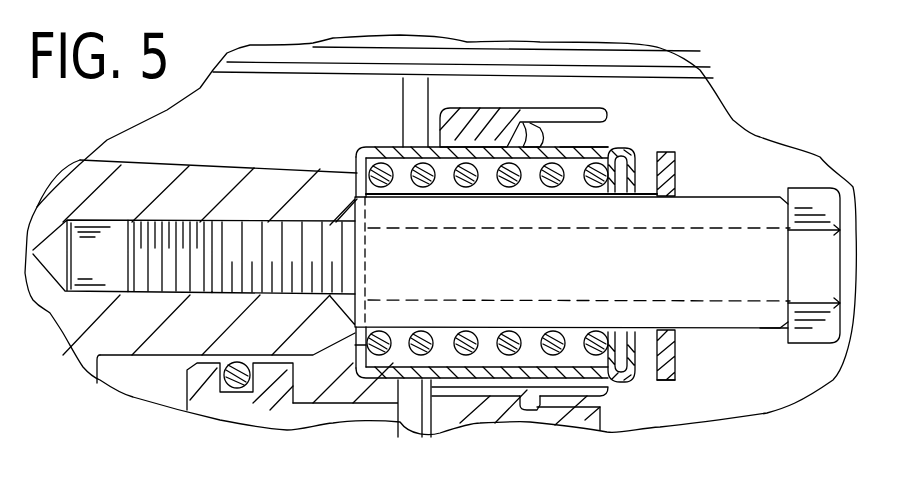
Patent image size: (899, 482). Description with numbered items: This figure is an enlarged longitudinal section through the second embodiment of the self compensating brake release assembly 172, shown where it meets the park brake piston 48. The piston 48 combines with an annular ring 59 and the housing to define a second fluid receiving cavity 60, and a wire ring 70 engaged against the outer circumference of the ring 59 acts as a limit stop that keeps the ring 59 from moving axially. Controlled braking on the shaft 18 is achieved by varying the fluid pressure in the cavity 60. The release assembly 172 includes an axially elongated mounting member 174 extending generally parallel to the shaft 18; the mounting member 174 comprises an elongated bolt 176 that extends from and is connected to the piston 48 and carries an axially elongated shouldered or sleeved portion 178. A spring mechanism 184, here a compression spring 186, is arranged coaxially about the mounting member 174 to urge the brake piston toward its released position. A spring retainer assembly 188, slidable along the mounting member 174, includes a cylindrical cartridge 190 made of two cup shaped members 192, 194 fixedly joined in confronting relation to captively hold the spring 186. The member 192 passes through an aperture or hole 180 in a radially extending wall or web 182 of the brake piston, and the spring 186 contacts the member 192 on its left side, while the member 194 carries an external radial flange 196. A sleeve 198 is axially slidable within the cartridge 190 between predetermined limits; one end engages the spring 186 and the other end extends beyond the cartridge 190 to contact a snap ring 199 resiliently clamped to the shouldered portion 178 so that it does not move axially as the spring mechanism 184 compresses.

The shaft 18 is at (598, 57).
The piston 48 is at (202, 125).
The annular ring 59 is at (203, 400).
The second fluid receiving cavity 60 is at (143, 380).
The wire ring 70 is at (407, 435).
The brake release assembly 172 is at (700, 123).
The mounting member 174 is at (731, 198).
The bolt 176 is at (808, 202).
The shouldered or sleeved portion 178 is at (750, 323).
The aperture or hole 180 is at (477, 378).
The wall or web 182 is at (612, 418).
The spring mechanism 184 is at (569, 169).
The compression spring 186 is at (560, 357).
The spring retainer assembly 188 is at (371, 141).
The cartridge 190 is at (354, 164).
The cup shaped member 192 is at (417, 150).
The cup shaped member 194 is at (572, 147).
The external radial flange 196 is at (527, 147).
The sleeve 198 is at (630, 193).
The snap ring 199 is at (673, 372).